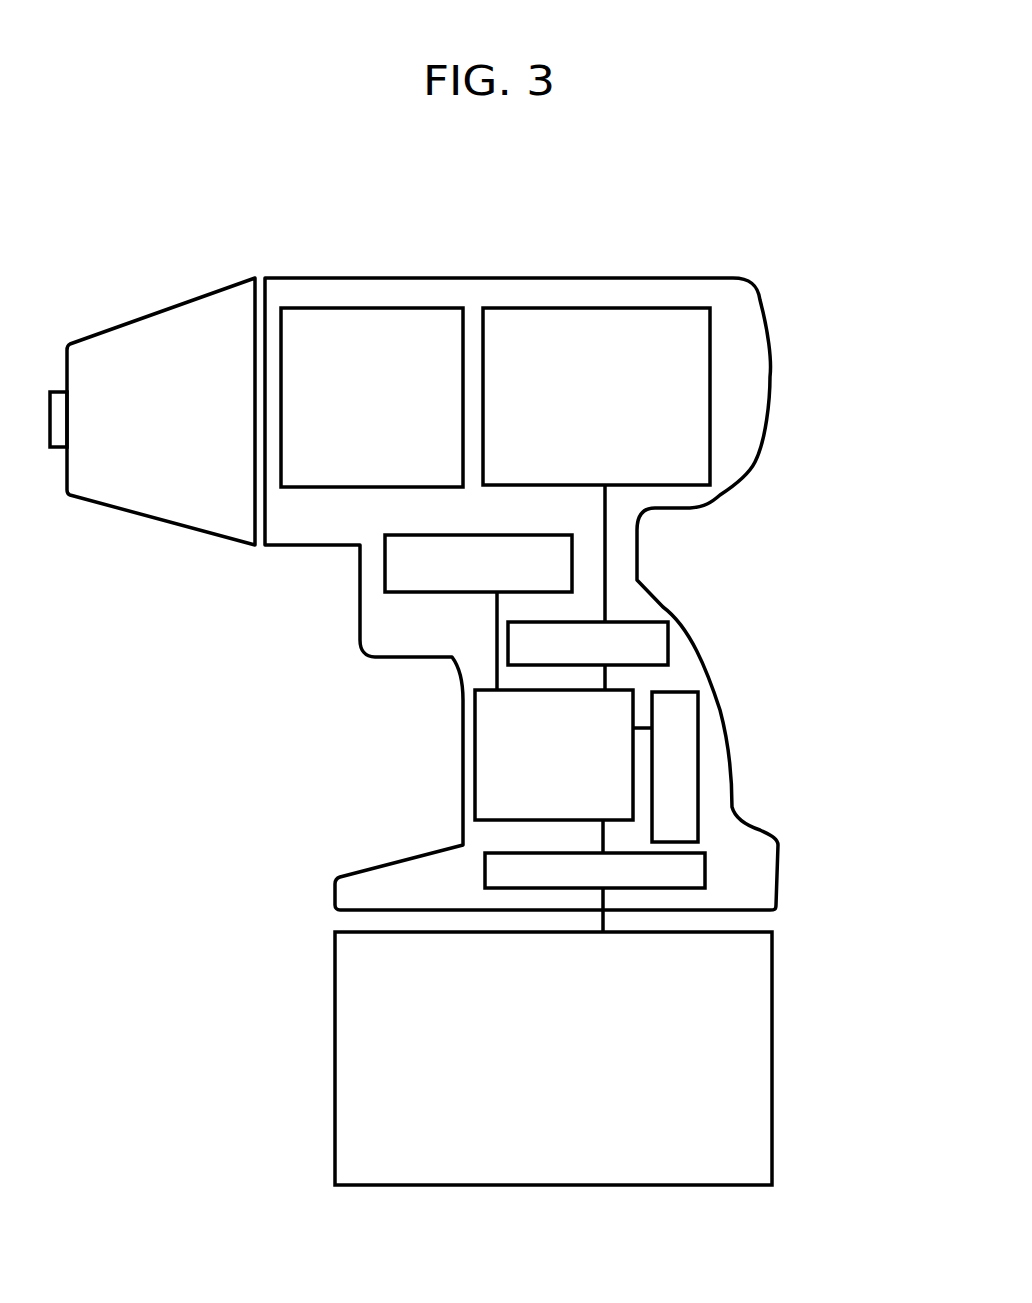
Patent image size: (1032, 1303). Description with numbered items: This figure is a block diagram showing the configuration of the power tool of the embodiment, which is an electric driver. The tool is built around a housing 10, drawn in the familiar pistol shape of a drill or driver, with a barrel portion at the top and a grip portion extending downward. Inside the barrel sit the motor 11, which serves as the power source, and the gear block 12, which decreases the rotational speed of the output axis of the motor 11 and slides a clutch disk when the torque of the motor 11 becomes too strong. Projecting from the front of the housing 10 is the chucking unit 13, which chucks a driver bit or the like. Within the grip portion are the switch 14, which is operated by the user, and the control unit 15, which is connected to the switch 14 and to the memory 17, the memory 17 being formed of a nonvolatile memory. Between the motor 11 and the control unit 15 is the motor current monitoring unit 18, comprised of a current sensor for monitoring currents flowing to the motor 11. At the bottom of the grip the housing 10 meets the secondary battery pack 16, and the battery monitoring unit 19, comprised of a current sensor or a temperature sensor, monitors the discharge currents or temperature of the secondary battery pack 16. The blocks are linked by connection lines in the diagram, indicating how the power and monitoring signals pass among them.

The housing 10 is at (712, 288).
The motor 11 is at (693, 367).
The gear block 12 is at (398, 322).
The chucking unit 13 is at (245, 303).
The switch 14 is at (562, 568).
The control unit 15 is at (623, 712).
The secondary battery pack 16 is at (762, 1000).
The memory 17 is at (697, 777).
The motor current monitoring unit 18 is at (653, 643).
The battery monitoring unit 19 is at (700, 872).